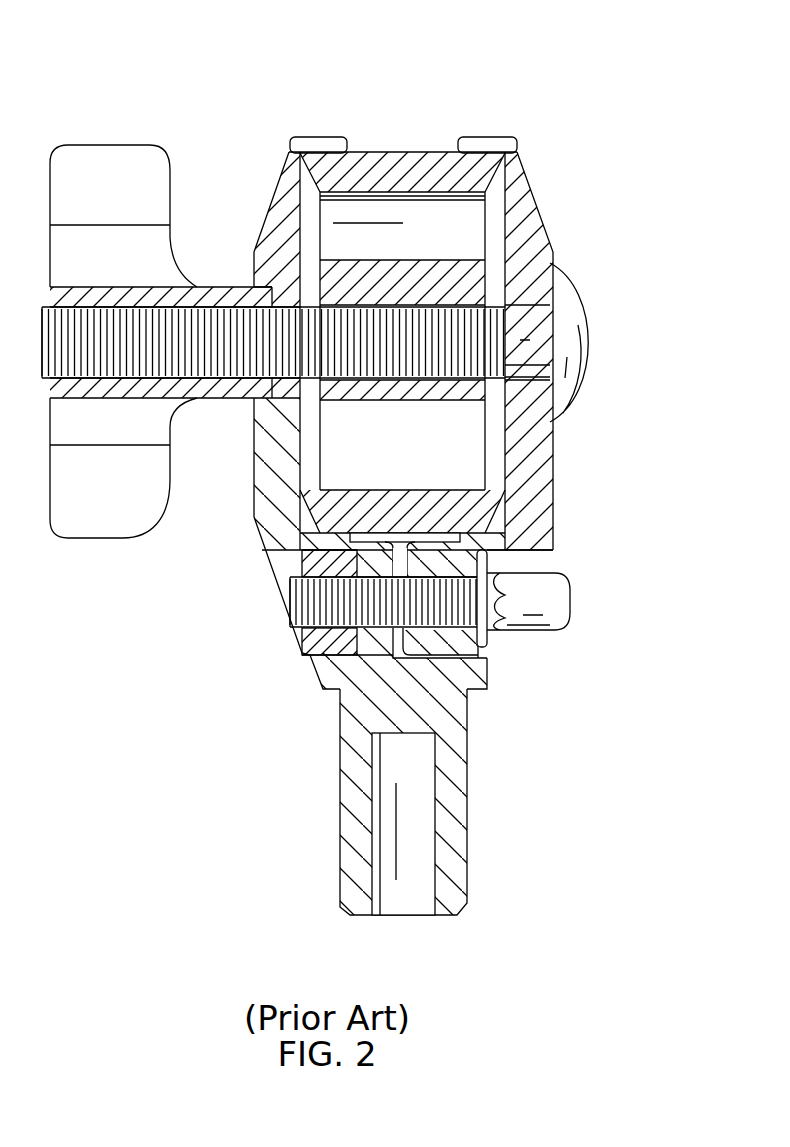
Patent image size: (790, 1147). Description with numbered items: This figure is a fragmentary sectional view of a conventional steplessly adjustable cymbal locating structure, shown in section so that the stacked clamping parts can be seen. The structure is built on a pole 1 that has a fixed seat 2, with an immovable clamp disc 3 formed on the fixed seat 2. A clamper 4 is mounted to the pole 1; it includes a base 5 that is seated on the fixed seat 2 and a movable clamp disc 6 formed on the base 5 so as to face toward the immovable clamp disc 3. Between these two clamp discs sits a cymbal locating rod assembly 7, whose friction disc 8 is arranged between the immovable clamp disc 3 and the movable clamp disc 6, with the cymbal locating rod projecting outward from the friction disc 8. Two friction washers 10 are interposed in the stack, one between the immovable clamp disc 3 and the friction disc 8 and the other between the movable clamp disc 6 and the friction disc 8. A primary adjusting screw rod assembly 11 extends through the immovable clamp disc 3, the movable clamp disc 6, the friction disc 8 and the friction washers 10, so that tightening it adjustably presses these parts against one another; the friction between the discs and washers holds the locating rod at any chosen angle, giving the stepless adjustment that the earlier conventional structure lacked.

The pole 1 is at (450, 780).
The fixed seat 2 is at (322, 672).
The immovable clamp disc 3 is at (280, 510).
The clamper 4 is at (540, 547).
The base 5 is at (450, 642).
The movable clamp disc 6 is at (537, 458).
The cymbal locating rod assembly 7 is at (429, 117).
The friction disc 8 is at (383, 160).
The friction washers 10 is at (478, 153).
The primary adjusting screw rod assembly 11 is at (106, 170).